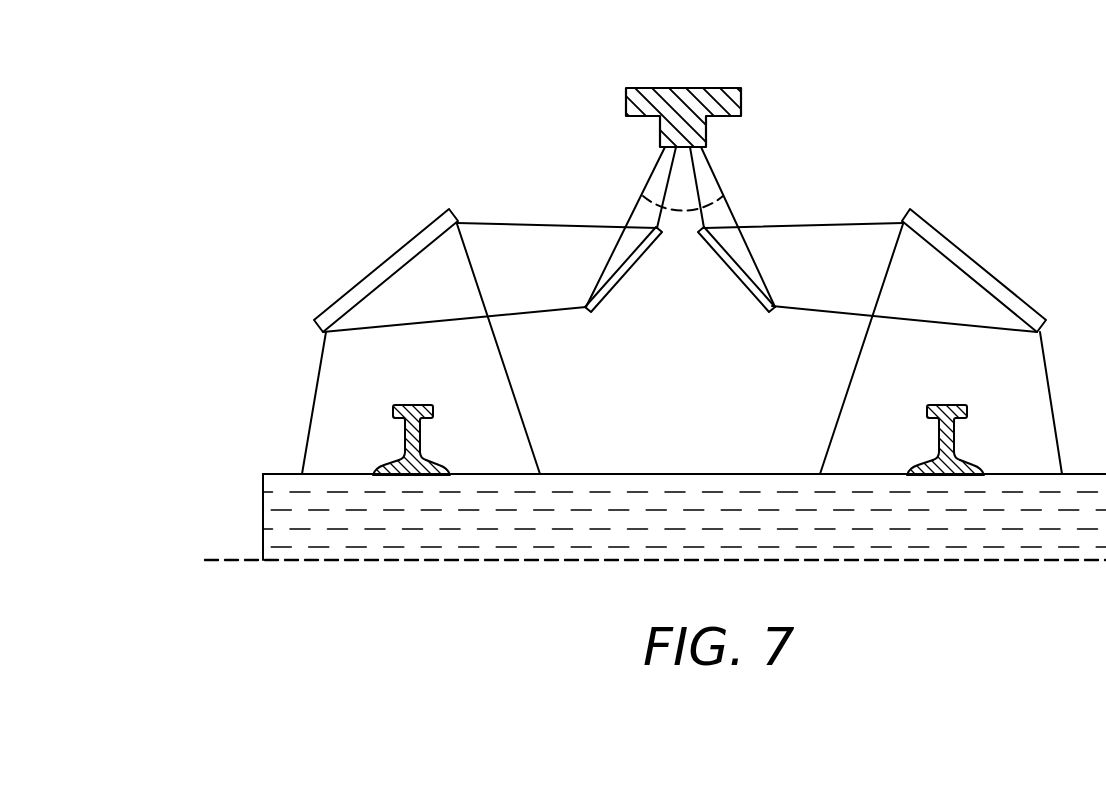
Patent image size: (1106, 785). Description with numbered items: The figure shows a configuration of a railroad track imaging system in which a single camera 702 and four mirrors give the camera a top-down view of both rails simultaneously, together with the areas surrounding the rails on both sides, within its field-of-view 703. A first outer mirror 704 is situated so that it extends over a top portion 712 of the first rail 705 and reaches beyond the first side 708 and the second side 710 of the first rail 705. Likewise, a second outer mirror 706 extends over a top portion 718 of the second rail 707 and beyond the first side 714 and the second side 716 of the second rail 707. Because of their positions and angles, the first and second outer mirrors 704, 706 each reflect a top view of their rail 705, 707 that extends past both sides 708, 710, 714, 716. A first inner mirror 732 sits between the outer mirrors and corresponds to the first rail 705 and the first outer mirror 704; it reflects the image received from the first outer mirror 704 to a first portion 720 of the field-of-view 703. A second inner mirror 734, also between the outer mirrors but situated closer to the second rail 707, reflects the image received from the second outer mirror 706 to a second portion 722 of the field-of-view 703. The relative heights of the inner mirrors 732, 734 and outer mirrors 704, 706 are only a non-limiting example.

The camera 702 is at (686, 88).
The field-of-view 703 is at (682, 212).
The first outer mirror 704 is at (383, 262).
The first rail 705 is at (433, 465).
The second outer mirror 706 is at (998, 277).
The second rail 707 is at (967, 455).
The first side of the first rail 708 is at (393, 432).
The second side of the first rail 710 is at (432, 434).
The top portion of the first rail 712 is at (401, 396).
The first side of the second rail 714 is at (941, 440).
The second side of the second rail 716 is at (1001, 434).
The top portion of the second rail 718 is at (918, 383).
The first portion of the camera's field-of-view 720 is at (642, 188).
The second portion of the camera's field-of-view 722 is at (724, 188).
The first inner mirror 732 is at (616, 287).
The second inner mirror 734 is at (741, 286).